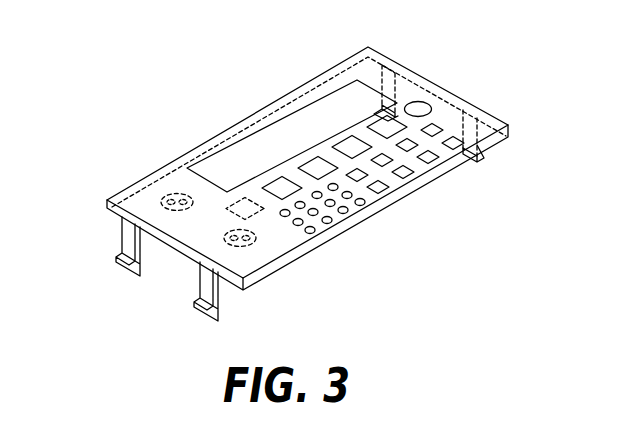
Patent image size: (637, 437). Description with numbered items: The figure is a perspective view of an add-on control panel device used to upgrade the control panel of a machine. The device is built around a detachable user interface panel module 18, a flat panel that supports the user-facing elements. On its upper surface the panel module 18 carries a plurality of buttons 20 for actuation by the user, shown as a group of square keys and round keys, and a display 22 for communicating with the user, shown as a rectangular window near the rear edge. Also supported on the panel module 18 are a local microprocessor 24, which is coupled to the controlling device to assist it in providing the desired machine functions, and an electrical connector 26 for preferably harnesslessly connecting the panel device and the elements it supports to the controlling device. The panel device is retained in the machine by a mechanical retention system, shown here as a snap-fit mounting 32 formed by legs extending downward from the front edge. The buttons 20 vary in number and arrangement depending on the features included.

The detachable user interface panel module 18 is at (430, 83).
The buttons 20 is at (432, 110).
The display 22 is at (359, 80).
The local microprocessor 24 is at (263, 210).
The electrical connector 26 is at (177, 208).
The snap-fit mounting 32 is at (120, 253).